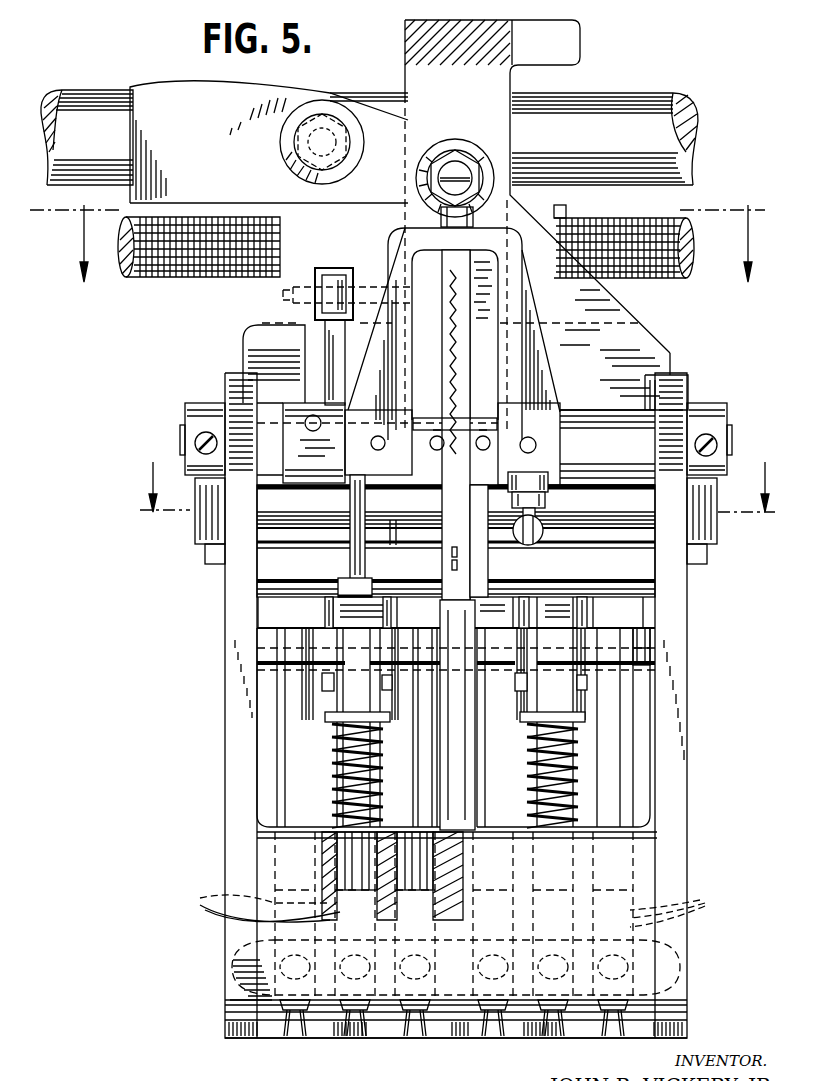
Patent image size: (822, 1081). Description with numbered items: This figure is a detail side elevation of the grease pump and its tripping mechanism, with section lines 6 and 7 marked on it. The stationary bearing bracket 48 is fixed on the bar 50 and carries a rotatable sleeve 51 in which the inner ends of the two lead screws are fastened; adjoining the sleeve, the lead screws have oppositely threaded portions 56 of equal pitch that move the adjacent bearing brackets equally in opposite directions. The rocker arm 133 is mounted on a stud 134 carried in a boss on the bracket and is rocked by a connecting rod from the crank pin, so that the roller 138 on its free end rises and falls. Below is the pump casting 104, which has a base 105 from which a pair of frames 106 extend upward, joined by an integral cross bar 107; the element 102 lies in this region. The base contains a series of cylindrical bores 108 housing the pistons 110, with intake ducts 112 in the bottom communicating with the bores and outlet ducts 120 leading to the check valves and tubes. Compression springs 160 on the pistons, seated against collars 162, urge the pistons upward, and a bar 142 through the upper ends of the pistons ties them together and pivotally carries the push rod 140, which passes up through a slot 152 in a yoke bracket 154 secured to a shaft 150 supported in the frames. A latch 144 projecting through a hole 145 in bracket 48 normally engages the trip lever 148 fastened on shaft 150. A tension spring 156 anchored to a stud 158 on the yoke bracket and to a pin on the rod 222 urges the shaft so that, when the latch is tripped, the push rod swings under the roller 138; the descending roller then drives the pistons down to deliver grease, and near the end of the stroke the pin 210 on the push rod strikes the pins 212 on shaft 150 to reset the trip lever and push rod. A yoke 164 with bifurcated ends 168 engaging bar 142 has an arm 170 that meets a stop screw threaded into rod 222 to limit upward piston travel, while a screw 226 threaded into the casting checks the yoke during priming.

The section line 6- 6 is at (397, 255).
The section line 7- 7 is at (457, 499).
The stationary bearing bracket 48 is at (408, 70).
The bar 50 is at (612, 110).
The sleeve 51 is at (560, 212).
The oppositely threaded portions 56 is at (662, 245).
The support plate 102 is at (638, 342).
The pump casting 104 is at (240, 848).
The base 105 is at (456, 1050).
The frames 106 is at (232, 688).
The cross bar 107 is at (620, 390).
The cylindrical bores 108 is at (455, 943).
The pistons 110 is at (290, 800).
The intake ducts 112 is at (384, 1032).
The outlet ducts 120 is at (356, 960).
The rocker arm 133 is at (257, 115).
The stud 134 is at (352, 162).
The roller 138 is at (476, 152).
The push rod 140 is at (452, 346).
The bar 142 is at (650, 662).
The latch 144 is at (332, 290).
The hole 145 is at (340, 315).
The trip lever 148 is at (326, 349).
The shaft 150 is at (593, 440).
The slot 152 is at (476, 258).
The yoke bracket 154 is at (540, 353).
The tension spring 156 is at (543, 535).
The stud 158 is at (545, 512).
The compression springs 160 is at (530, 760).
The collars 162 is at (520, 727).
The yoke 164 is at (612, 596).
The bifurcated ends 168 is at (387, 628).
The arm 170 is at (482, 552).
The pin 210 is at (423, 418).
The pins 212 is at (482, 452).
The rod 222 is at (394, 528).
The screw 226 is at (365, 563).